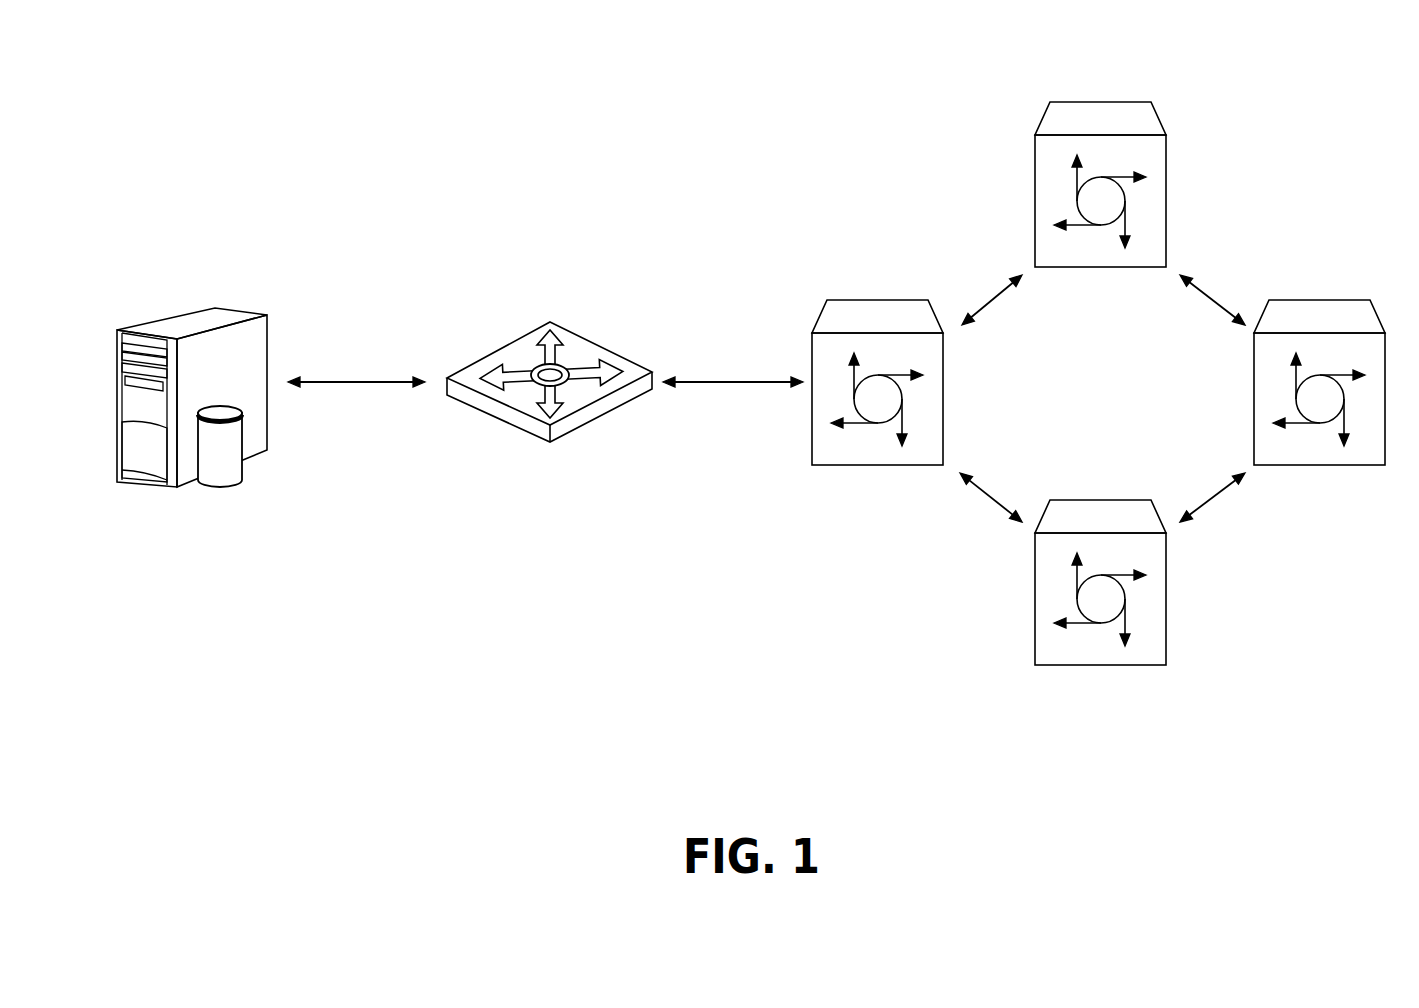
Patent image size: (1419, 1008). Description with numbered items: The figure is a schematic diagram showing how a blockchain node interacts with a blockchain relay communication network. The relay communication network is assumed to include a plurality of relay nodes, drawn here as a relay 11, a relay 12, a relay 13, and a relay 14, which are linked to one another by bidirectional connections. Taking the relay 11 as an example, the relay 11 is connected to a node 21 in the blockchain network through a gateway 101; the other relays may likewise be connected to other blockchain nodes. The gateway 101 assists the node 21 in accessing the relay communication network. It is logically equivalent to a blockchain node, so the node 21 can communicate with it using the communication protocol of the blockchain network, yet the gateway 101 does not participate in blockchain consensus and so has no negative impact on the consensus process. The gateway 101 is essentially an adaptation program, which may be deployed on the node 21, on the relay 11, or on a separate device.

The node 21 is at (207, 327).
The gateway 101 is at (530, 353).
The relay 11 is at (885, 315).
The relay 12 is at (1108, 120).
The relay 13 is at (1105, 518).
The relay 14 is at (1312, 308).